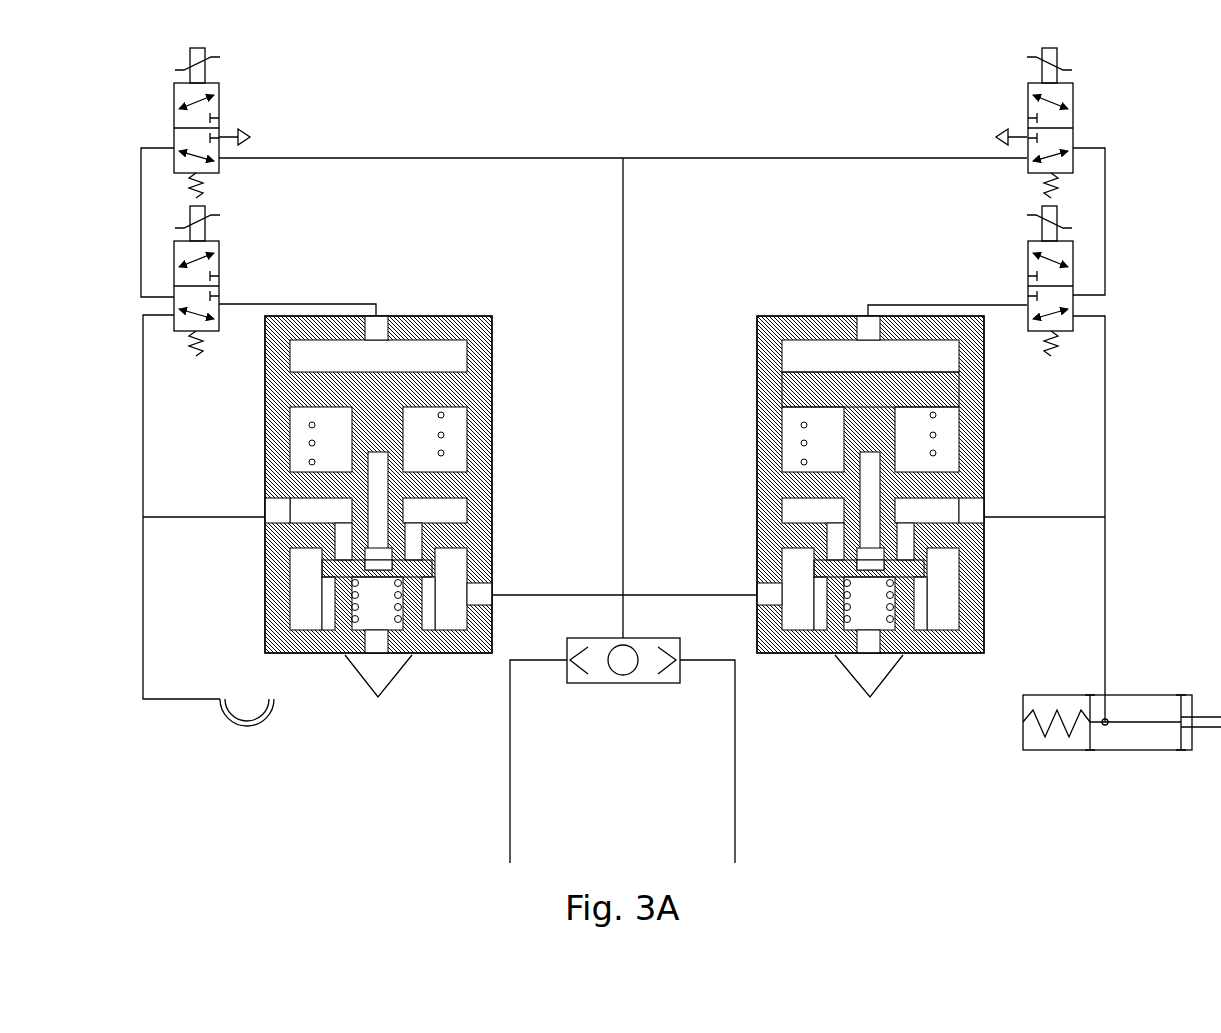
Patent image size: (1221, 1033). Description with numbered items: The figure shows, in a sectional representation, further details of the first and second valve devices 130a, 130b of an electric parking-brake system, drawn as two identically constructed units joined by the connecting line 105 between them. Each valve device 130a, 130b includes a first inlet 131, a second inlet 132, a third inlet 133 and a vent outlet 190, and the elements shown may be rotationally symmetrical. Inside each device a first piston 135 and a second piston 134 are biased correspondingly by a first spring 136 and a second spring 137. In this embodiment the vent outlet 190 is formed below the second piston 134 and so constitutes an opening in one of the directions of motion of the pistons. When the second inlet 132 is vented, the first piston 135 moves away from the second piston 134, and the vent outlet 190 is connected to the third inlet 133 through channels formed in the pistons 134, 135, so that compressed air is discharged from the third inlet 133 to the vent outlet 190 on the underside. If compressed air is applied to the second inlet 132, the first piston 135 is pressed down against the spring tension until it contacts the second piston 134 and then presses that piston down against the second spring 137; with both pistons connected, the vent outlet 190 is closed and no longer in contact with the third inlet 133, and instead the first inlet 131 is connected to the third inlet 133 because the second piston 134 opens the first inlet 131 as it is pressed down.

The supply line 105 is at (623, 520).
The first valve device 130a is at (856, 502).
The second valve device 130b is at (492, 370).
The first inlet 131 is at (725, 580).
The second inlet 132 is at (846, 294).
The third inlet 133 is at (1018, 494).
The second piston 134 is at (791, 532).
The first piston 135 is at (848, 333).
The first spring 136 is at (998, 416).
The second spring 137 is at (956, 624).
The vent outlet 190 is at (880, 705).